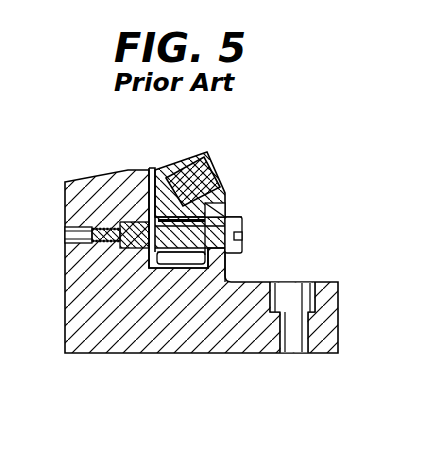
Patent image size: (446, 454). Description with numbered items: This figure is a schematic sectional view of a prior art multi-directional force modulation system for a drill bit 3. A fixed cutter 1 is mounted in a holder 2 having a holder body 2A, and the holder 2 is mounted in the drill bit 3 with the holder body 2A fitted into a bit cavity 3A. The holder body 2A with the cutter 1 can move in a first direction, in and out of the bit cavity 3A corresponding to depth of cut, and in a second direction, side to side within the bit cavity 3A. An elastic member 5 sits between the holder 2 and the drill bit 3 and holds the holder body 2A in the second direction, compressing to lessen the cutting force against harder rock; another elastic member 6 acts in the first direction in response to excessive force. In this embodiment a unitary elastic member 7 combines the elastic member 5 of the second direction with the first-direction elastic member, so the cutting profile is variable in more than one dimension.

The fixed cutter 1 is at (203, 173).
The holder 2 is at (172, 168).
The holder body 2A is at (160, 176).
The drill bit 3 is at (96, 184).
The bit cavity 3A is at (226, 255).
The elastic member 5 is at (152, 210).
The another elastic member 6 is at (178, 265).
The unitary elastic member 7 is at (148, 268).